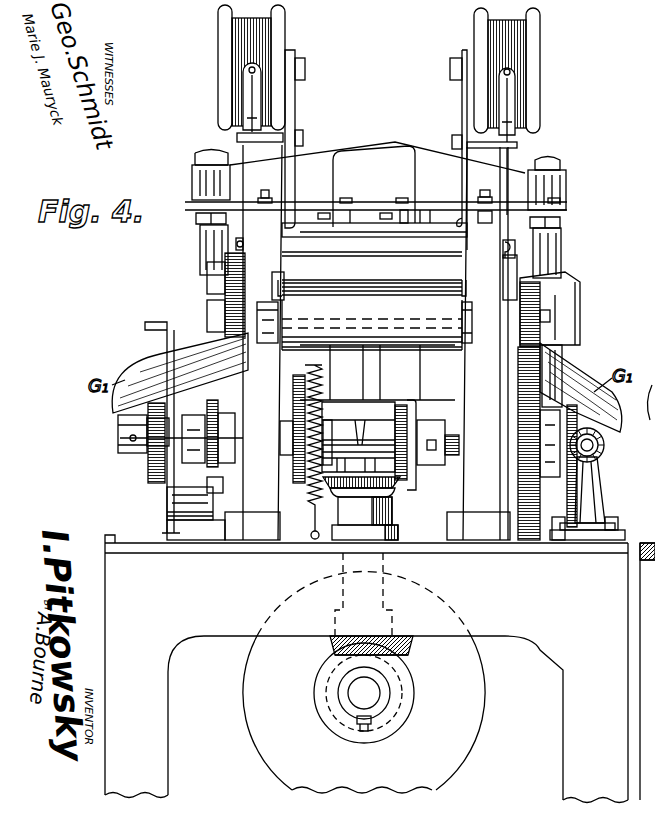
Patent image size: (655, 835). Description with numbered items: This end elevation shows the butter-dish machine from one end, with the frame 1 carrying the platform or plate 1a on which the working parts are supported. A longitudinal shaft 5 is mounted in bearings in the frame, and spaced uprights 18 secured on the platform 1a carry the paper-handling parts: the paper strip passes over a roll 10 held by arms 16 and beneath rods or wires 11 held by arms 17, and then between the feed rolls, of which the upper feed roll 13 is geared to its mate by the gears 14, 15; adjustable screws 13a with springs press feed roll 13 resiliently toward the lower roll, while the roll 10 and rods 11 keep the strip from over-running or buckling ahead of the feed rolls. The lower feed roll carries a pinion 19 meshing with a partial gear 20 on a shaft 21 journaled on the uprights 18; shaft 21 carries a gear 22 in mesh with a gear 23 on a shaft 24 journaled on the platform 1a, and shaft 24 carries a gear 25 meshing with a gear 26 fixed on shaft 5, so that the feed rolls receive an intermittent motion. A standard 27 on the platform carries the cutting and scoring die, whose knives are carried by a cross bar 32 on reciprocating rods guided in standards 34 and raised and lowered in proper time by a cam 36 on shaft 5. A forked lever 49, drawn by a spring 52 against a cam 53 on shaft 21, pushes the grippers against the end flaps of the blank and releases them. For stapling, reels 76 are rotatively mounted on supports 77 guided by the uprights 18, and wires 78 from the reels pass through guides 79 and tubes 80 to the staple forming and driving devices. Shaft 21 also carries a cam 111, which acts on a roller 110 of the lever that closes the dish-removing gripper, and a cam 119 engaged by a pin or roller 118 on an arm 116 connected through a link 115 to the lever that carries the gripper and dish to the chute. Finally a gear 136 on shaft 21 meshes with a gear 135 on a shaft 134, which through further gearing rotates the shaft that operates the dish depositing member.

The frame 1 is at (380, 594).
The platform or plate 1a is at (108, 535).
The shaft 5 is at (364, 704).
The roll 10 is at (440, 338).
The rods or wires 11 is at (460, 262).
The feed roll 13 is at (372, 274).
The adjustable screws 13a is at (488, 193).
The gear 14 is at (207, 312).
The gear 15 is at (207, 278).
The arms 16 is at (270, 345).
The arms 17 is at (460, 318).
The uprights 18 is at (367, 342).
The pinion 19 is at (540, 285).
The partial gear 20 is at (563, 393).
The shaft 21 is at (452, 430).
The gear 22 is at (403, 480).
The gear 23 is at (397, 490).
The shaft 24 is at (385, 575).
The gear 25 is at (410, 652).
The gear 26 is at (400, 706).
The standard 27 is at (358, 421).
The cross bar 32 is at (330, 162).
The standards 34 is at (580, 305).
The cam 36 is at (462, 745).
The forked lever 49 is at (428, 393).
The spring 52 is at (310, 512).
The cam 53 is at (293, 430).
The reels 76 is at (222, 55).
The supports 77 is at (295, 112).
The wires 78 is at (237, 148).
The guides 79 is at (243, 95).
The tubes 80 is at (243, 244).
The roller 110 is at (207, 485).
The cam 111 is at (213, 410).
The link 115 is at (145, 325).
The arm 116 is at (175, 349).
The pin or roller 118 is at (140, 465).
The cam 119 is at (158, 483).
The shaft 134 is at (605, 445).
The gear 135 is at (603, 453).
The gear 136 is at (590, 483).